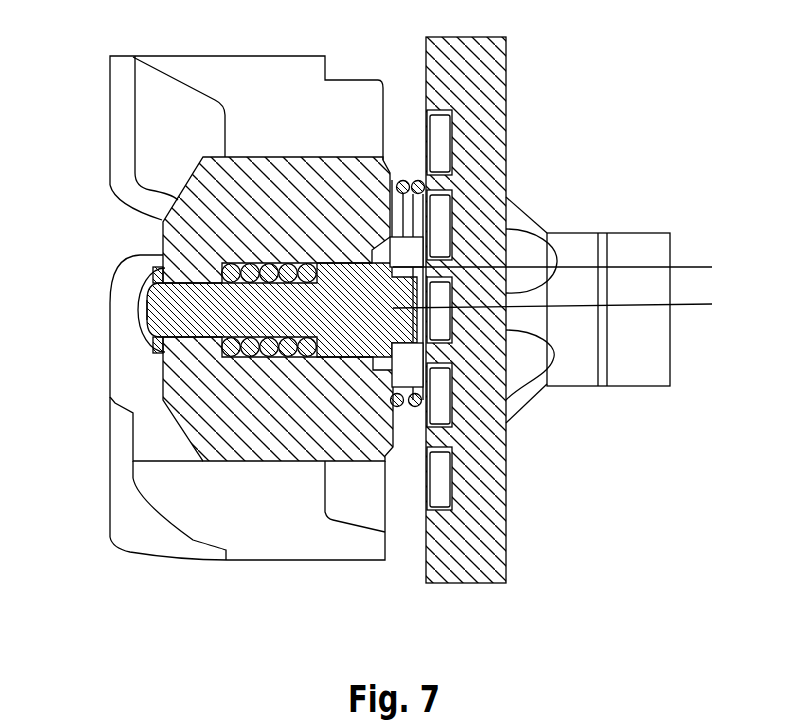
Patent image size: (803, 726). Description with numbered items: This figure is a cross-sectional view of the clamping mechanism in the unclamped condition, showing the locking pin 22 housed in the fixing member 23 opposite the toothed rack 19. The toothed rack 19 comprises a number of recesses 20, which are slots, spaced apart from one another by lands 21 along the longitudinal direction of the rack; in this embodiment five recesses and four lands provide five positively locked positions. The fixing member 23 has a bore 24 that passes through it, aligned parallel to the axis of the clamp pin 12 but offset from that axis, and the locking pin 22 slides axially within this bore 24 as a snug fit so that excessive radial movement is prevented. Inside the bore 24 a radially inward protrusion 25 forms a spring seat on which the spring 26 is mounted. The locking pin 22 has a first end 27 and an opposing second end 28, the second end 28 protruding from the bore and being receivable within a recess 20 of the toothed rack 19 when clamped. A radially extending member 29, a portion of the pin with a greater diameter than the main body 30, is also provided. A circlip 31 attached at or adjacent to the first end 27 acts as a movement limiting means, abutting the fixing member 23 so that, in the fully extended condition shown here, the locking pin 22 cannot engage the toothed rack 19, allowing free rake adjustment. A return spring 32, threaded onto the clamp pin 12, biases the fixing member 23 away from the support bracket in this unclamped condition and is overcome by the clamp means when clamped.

The clamp pin 12 is at (412, 253).
The toothed rack 19 is at (460, 88).
The recesses 20 is at (440, 133).
The lands 21 is at (440, 433).
The locking pin 22 is at (160, 263).
The fixing member 23 is at (192, 235).
The bore 24 is at (275, 357).
The radially inward protrusion 25 is at (207, 347).
The spring 26 is at (277, 262).
The first end 27 is at (148, 312).
The second end 28 is at (570, 301).
The radially extending member 29 is at (570, 266).
The main body 30 is at (195, 343).
The circlip 31 is at (155, 343).
The return spring 32 is at (414, 407).